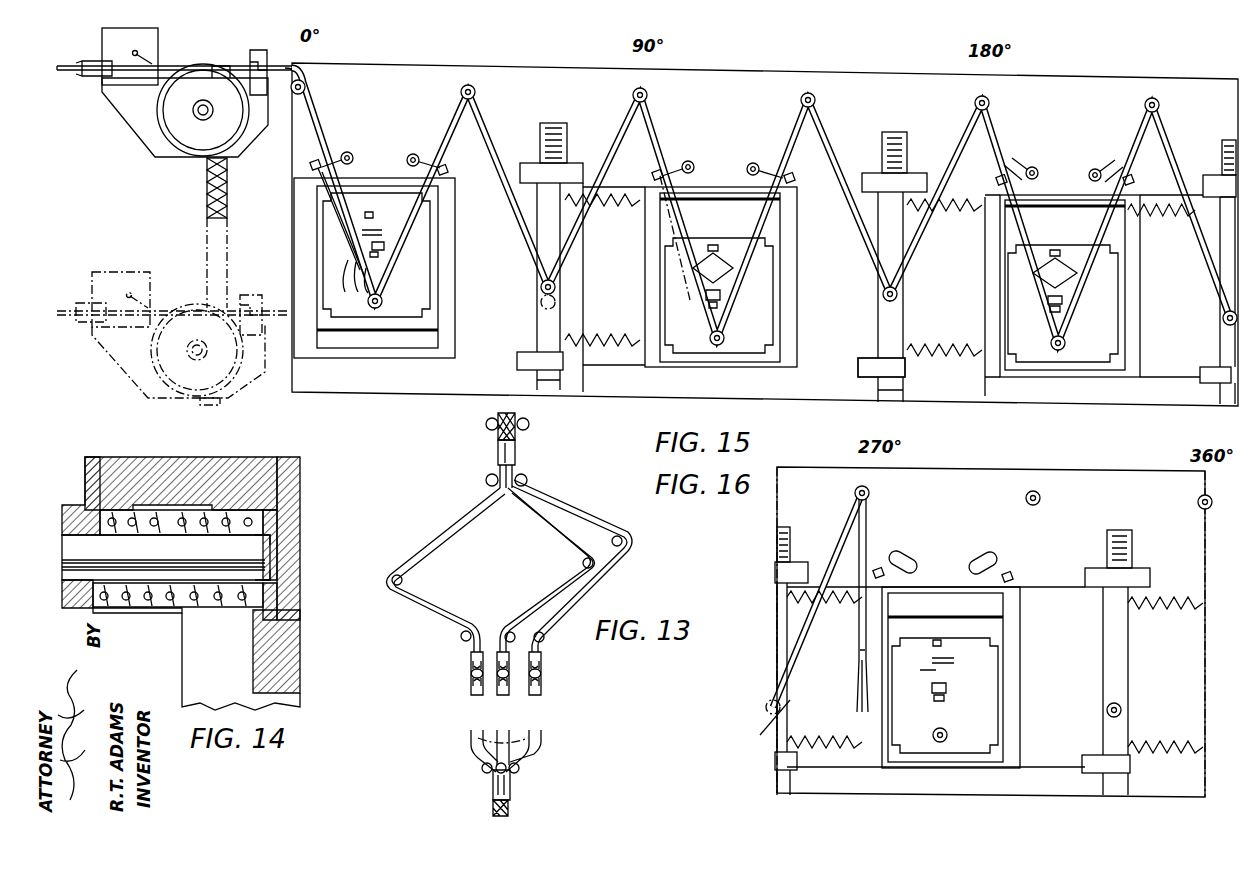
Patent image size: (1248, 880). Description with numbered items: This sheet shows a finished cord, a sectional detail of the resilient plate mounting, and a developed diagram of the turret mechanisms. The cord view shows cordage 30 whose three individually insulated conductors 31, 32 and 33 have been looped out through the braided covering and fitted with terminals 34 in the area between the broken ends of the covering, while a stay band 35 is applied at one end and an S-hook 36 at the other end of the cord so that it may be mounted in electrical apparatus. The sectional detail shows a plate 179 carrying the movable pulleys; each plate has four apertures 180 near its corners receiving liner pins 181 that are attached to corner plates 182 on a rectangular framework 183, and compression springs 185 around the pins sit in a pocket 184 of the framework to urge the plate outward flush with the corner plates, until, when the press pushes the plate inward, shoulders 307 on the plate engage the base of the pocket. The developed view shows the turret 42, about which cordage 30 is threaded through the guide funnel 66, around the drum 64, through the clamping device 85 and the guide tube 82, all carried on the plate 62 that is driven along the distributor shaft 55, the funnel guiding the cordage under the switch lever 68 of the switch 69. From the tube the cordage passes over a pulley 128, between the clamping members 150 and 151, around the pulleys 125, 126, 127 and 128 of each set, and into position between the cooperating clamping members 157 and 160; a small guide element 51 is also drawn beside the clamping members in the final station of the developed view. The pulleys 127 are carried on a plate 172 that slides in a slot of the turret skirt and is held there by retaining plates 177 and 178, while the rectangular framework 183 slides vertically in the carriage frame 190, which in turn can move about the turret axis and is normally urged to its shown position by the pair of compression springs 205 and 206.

In FIG. 15, the cordage 30 is at (67, 64).
In FIG. 16, the cordage 30 is at (838, 548).
In FIG. 13, the cordage 30 is at (516, 420).
In FIG. 13, the individually insulated conductor 31 is at (458, 522).
In FIG. 13, the individually insulated conductor 32 is at (538, 525).
In FIG. 13, the individually insulated conductor 33 is at (585, 523).
In FIG. 16, the terminals 34 is at (856, 710).
In FIG. 13, the terminals 34 is at (470, 712).
In FIG. 13, the stay band 35 is at (492, 792).
In FIG. 16, the S-hook 36 is at (858, 652).
In FIG. 13, the S-hook 36 is at (516, 458).
In FIG. 15, the turret 42 is at (405, 64).
In FIG. 16, the guide block 51 is at (880, 565).
In FIG. 15, the distributor shaft 55 is at (222, 198).
In FIG. 15, the plate 62 is at (127, 120).
In FIG. 15, the drum 64 is at (182, 128).
In FIG. 15, the guide funnel 66 is at (90, 74).
In FIG. 15, the switch lever 68 is at (152, 62).
In FIG. 15, the switch 69 is at (108, 36).
In FIG. 15, the guide tube 82 is at (300, 70).
In FIG. 15, the clamping device 85 is at (258, 50).
In FIG. 15, the pulleys 125 is at (384, 305).
In FIG. 16, the pulleys 125 is at (945, 742).
In FIG. 15, the pulleys 126 is at (476, 92).
In FIG. 16, the pulleys 126 is at (1041, 498).
In FIG. 15, the pulleys 127 is at (556, 288).
In FIG. 16, the pulleys 127 is at (1106, 710).
In FIG. 15, the pulleys 128 is at (306, 87).
In FIG. 16, the pulleys 128 is at (870, 493).
In FIG. 15, the clamping member 150 is at (350, 152).
In FIG. 16, the clamping member 150 is at (905, 552).
In FIG. 15, the clamping member 151 is at (312, 166).
In FIG. 15, the clamping member 157 is at (420, 158).
In FIG. 16, the clamping member 157 is at (985, 556).
In FIG. 15, the clamping member 160 is at (447, 172).
In FIG. 16, the clamping member 160 is at (1008, 572).
In FIG. 15, the plate 172 is at (562, 312).
In FIG. 16, the plate 172 is at (1105, 728).
In FIG. 15, the retaining plate 177 is at (870, 175).
In FIG. 15, the retaining plate 178 is at (868, 362).
In FIG. 15, the plate 179 is at (420, 257).
In FIG. 16, the plate 179 is at (985, 660).
In FIG. 14, the plate 179 is at (260, 670).
In FIG. 14, the apertures 180 is at (198, 535).
In FIG. 14, the liner pins 181 is at (218, 555).
In FIG. 14, the corner plates 182 is at (305, 510).
In FIG. 15, the rectangular framework 183 is at (400, 332).
In FIG. 16, the rectangular framework 183 is at (990, 620).
In FIG. 14, the rectangular framework 183 is at (270, 466).
In FIG. 14, the pocket 184 is at (108, 480).
In FIG. 14, the compression springs 185 is at (155, 518).
In FIG. 15, the carriage frame 190 is at (448, 280).
In FIG. 16, the carriage frame 190 is at (1012, 628).
In FIG. 15, the compression spring 205 is at (600, 208).
In FIG. 16, the compression spring 205 is at (845, 612).
In FIG. 15, the compression spring 206 is at (612, 330).
In FIG. 16, the compression spring 206 is at (838, 736).
In FIG. 14, the shoulders 307 is at (160, 612).